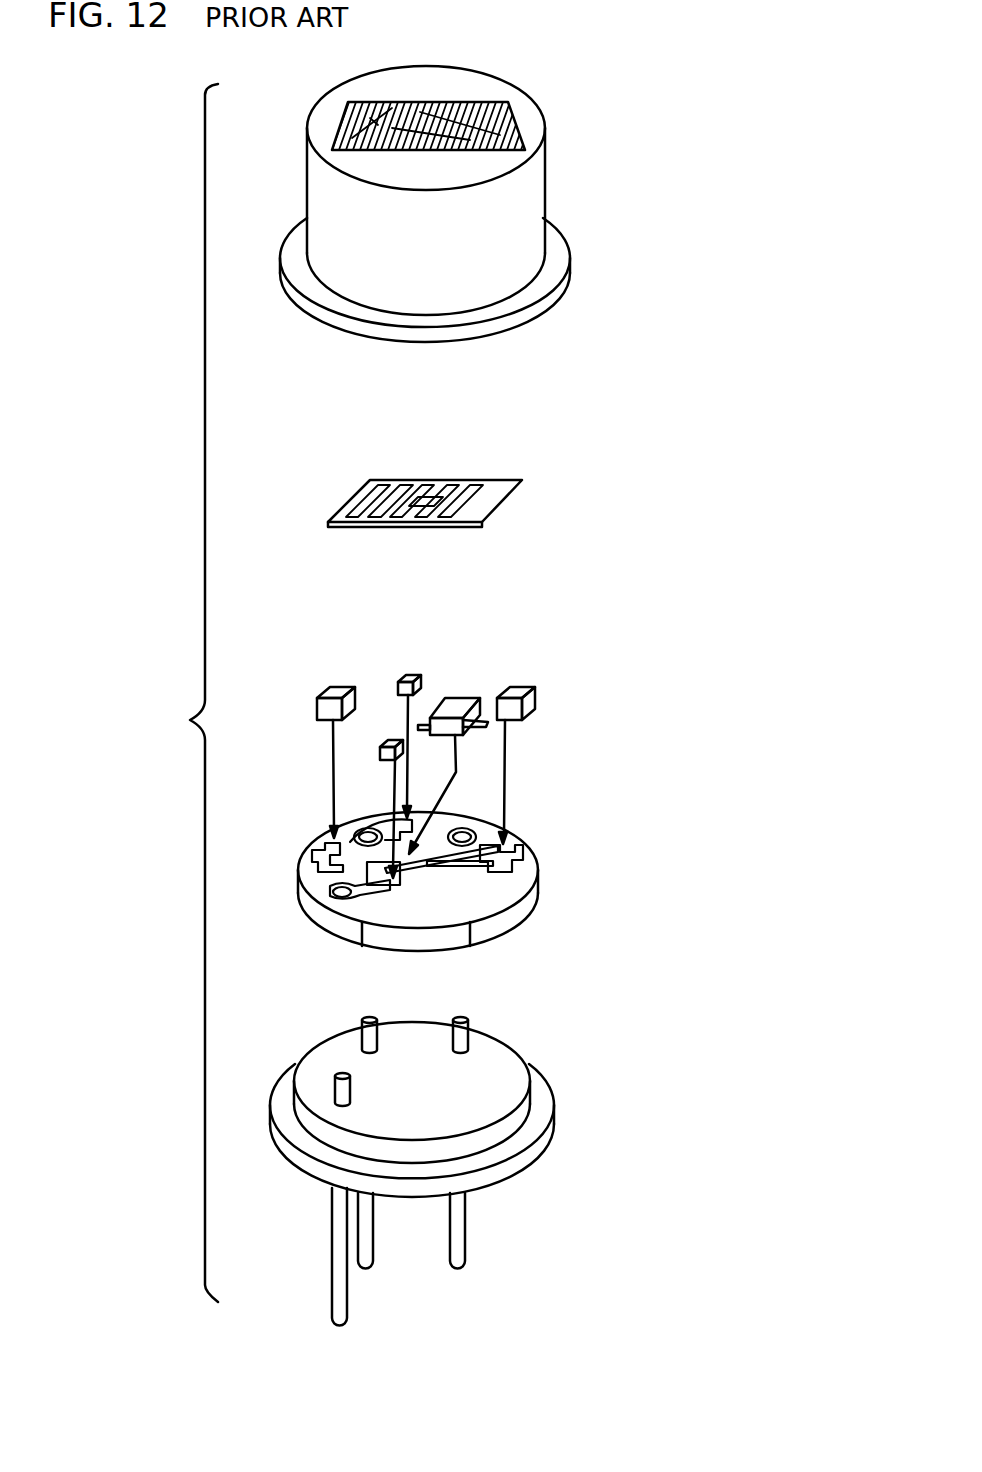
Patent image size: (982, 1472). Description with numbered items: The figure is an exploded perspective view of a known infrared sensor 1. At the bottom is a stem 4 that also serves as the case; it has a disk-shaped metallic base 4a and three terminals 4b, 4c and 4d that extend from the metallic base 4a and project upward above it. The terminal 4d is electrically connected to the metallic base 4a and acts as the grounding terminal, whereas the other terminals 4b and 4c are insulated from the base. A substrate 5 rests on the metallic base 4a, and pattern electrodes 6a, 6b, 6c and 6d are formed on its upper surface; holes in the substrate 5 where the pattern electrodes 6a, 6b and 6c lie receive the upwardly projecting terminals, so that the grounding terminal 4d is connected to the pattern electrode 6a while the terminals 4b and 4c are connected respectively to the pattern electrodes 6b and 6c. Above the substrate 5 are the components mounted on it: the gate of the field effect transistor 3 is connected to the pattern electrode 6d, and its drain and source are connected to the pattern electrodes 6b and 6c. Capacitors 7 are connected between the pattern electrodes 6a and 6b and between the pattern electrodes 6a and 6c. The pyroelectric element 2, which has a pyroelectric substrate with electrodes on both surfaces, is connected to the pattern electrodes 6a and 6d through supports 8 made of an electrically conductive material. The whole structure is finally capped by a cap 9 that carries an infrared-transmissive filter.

The infrared sensor 1 is at (182, 740).
The pyroelectric element 2 is at (488, 503).
The field effect transistor 3 is at (458, 705).
The stem 4 is at (570, 1121).
The metallic base 4a is at (507, 1075).
The terminal 4b is at (368, 1256).
The terminal 4c is at (460, 1238).
The grounding terminal 4d is at (338, 1276).
The substrate 5 is at (507, 922).
The pattern electrode 6a is at (320, 878).
The pattern electrode 6b is at (357, 833).
The pattern electrode 6c is at (479, 830).
The pattern electrode 6d is at (530, 865).
The capacitor 7 is at (388, 740).
The support 8 is at (335, 690).
The cap 9 is at (527, 193).